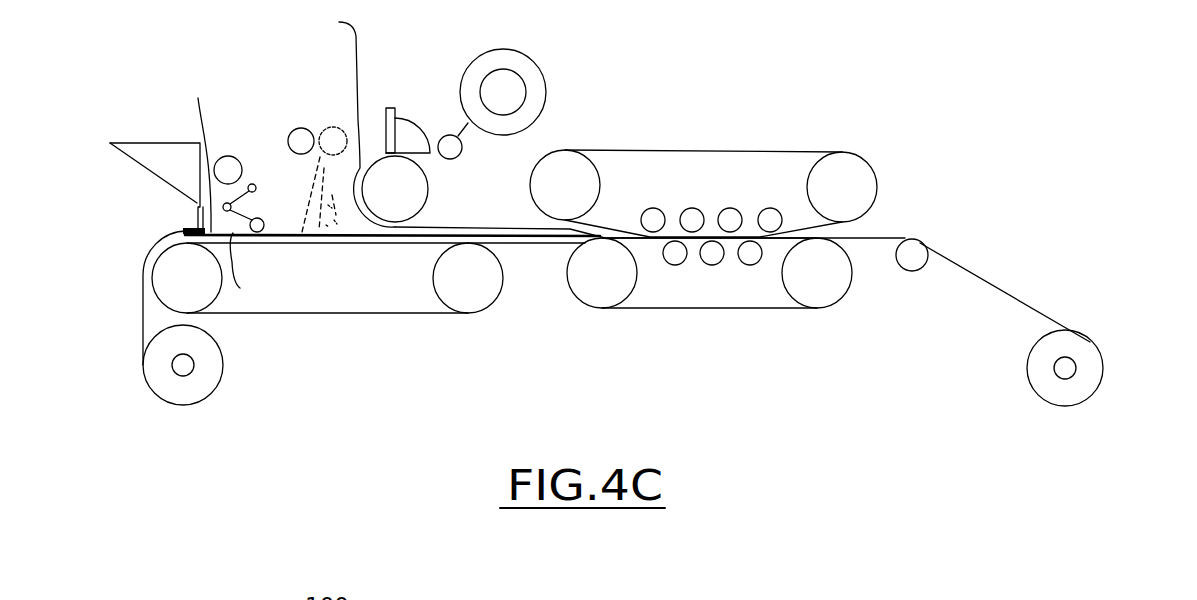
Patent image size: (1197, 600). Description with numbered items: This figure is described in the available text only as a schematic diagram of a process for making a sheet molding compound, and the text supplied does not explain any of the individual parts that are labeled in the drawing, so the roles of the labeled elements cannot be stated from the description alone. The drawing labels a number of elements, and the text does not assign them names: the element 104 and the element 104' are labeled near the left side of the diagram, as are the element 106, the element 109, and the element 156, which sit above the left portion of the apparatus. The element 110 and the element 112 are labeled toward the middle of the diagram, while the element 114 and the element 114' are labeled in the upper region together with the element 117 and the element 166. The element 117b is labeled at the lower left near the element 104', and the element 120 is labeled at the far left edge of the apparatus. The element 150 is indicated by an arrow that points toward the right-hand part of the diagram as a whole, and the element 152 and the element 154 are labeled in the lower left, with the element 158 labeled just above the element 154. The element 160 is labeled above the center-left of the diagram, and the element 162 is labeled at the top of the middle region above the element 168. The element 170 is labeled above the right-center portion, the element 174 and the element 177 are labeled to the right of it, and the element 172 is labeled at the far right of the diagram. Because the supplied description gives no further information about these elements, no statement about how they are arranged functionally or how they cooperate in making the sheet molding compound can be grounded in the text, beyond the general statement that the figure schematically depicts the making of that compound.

The web 104 is at (250, 264).
The hopper 104' is at (154, 174).
The roller 106 is at (252, 184).
The spreading device 109 is at (263, 219).
The web assembly 110 is at (493, 222).
The guide roller 112 is at (470, 140).
The cover web 114 is at (349, 120).
The second cover web 114' is at (441, 93).
The guide shoe 117 is at (435, 117).
The hopper wall 117b is at (181, 195).
The carrier web 120 is at (143, 313).
The forming apparatus 150 is at (917, 168).
The carrier web supply roll 152 is at (222, 382).
The forming belt 154 is at (338, 313).
The doctor blade 156 is at (180, 158).
The fibrous mat 158 is at (302, 236).
The powder applicator 160 is at (306, 124).
The cover web supply roll 162 is at (547, 75).
The applicator 166 is at (390, 108).
The guide roller 168 is at (418, 195).
The press belt unit 170 is at (772, 150).
The take-up roll 172 is at (1097, 347).
The guide roller 174 is at (920, 240).
The finished web 177 is at (992, 280).